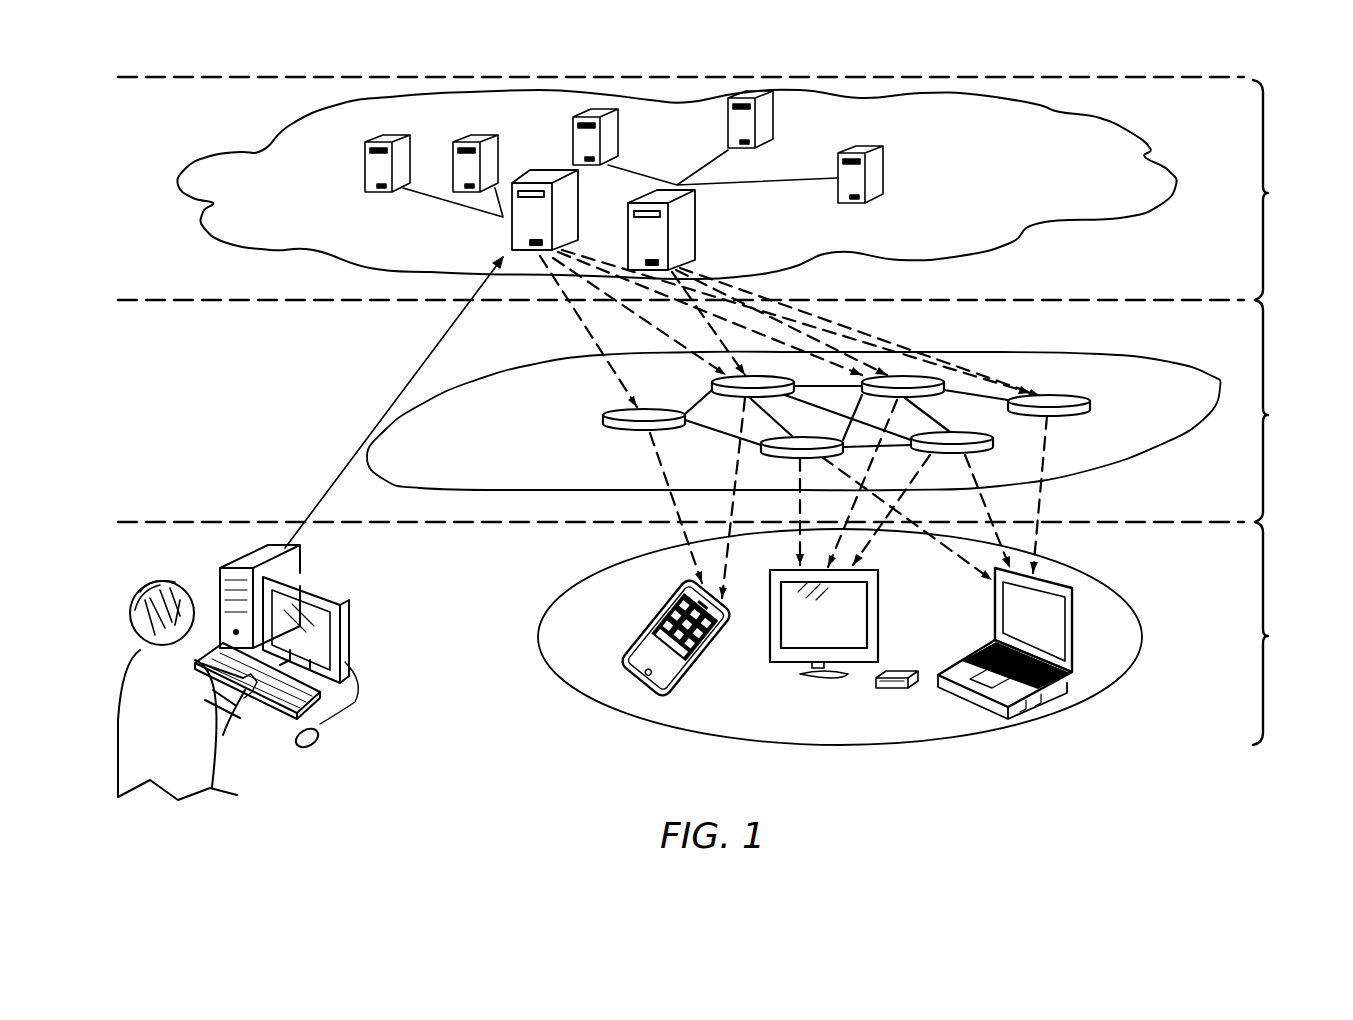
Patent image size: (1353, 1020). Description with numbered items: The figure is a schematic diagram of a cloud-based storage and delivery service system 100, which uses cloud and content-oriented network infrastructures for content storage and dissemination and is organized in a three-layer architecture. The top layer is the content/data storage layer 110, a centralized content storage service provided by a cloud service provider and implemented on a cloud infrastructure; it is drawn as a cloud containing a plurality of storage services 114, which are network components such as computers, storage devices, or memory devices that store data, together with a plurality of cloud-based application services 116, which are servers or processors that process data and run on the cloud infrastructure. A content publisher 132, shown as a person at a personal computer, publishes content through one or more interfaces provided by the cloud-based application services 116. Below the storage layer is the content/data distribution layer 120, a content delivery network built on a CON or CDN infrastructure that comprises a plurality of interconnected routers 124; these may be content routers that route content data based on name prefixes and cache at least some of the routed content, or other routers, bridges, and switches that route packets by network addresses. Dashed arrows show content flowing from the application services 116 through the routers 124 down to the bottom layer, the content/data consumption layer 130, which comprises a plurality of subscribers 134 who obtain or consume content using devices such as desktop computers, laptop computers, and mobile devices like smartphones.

The cloud-based storage and delivery service system 100 is at (288, 52).
The content/data storage layer 110 is at (1200, 190).
The storage services 114 is at (365, 155).
The cloud-based application services 116 is at (580, 184).
The content/data distribution layer 120 is at (1187, 411).
The routers 124 is at (603, 417).
The content/data consumption layer 130 is at (1186, 633).
The content publisher 132 is at (350, 637).
The subscribers 134 is at (1143, 637).